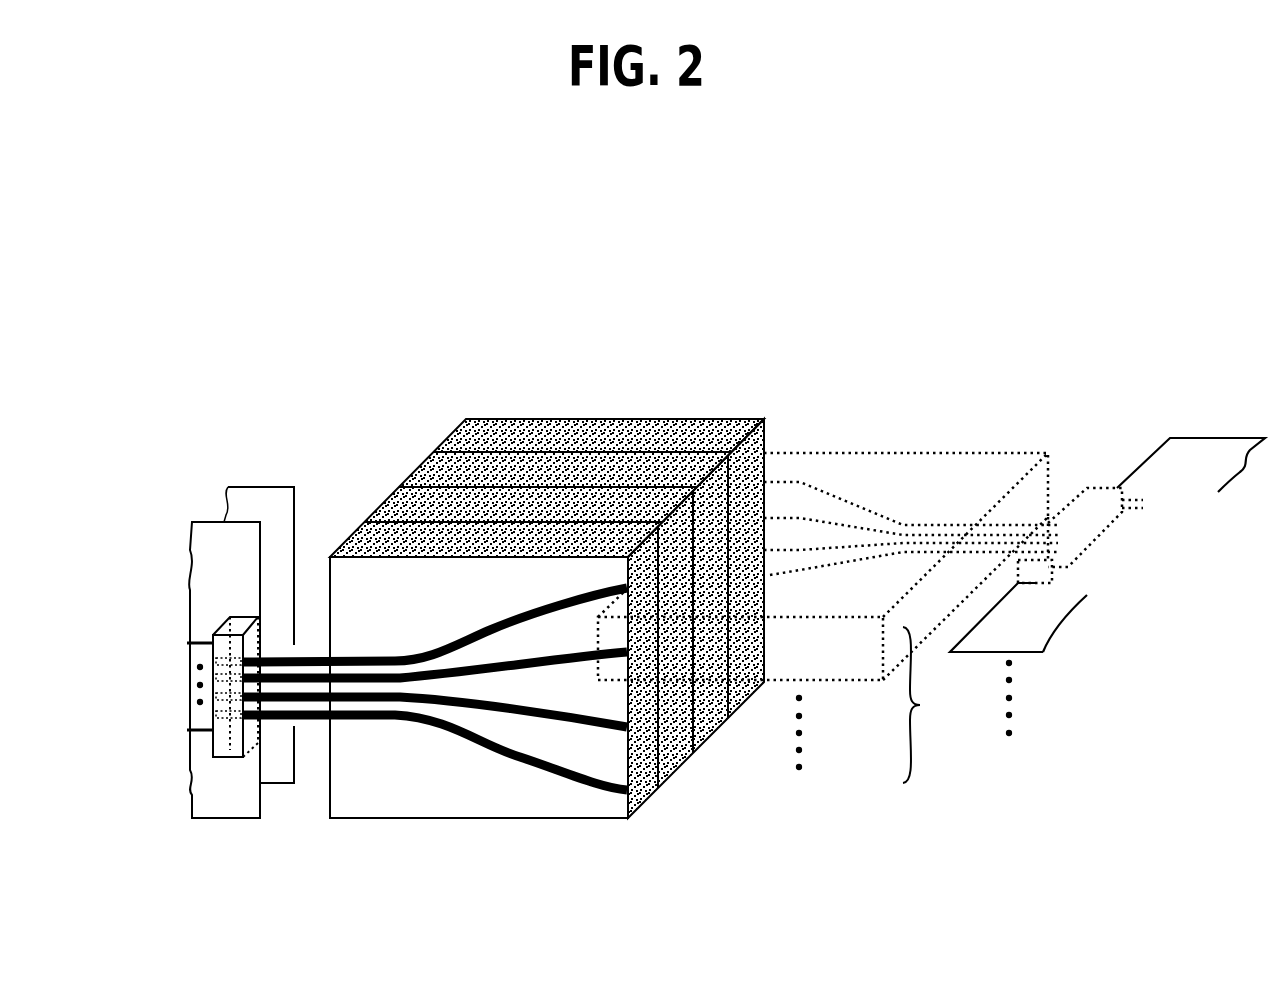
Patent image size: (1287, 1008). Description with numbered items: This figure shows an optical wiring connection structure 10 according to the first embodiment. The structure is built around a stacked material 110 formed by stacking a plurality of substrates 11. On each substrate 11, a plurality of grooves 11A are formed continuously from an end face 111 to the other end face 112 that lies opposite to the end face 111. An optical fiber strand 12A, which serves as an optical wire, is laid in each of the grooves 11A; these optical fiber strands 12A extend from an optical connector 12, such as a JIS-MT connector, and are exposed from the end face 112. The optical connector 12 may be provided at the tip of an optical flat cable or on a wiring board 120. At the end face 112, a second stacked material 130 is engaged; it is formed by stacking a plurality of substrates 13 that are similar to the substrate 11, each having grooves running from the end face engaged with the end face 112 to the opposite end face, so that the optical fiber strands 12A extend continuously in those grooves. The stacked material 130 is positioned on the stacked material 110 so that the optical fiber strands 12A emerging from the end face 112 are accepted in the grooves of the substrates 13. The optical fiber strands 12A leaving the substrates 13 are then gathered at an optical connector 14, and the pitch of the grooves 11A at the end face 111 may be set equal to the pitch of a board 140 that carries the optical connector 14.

The optical wiring connection structure 10 is at (221, 268).
The substrate 11 is at (502, 638).
The groove 11A is at (582, 592).
The stacked material 110 is at (313, 557).
The end face 111 is at (456, 735).
The end face 112 is at (643, 783).
The optical connector 12 is at (243, 633).
The optical fiber strand 12A is at (440, 640).
The wiring board 120 is at (223, 803).
The substrate 13 is at (830, 468).
The stacked material 130 is at (970, 635).
The optical connector 14 is at (1038, 585).
The board 140 is at (1198, 455).